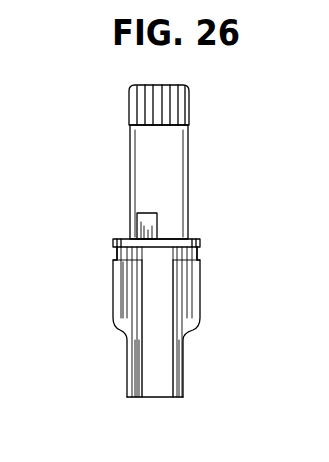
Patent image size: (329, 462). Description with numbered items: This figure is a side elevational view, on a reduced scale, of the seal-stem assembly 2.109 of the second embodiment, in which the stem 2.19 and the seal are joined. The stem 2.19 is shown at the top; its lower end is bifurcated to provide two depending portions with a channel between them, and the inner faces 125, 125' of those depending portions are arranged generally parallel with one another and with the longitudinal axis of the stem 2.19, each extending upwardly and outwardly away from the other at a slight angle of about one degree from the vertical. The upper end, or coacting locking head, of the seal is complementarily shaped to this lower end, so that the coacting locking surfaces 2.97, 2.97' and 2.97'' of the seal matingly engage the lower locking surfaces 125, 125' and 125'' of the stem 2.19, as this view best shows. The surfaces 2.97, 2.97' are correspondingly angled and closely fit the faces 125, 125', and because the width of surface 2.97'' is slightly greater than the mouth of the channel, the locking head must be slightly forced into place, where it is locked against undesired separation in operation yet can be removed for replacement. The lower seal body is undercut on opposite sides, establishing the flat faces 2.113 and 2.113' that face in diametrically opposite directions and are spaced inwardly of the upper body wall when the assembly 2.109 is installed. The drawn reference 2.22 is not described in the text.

The stem 2.19 is at (262, 92).
The seal-stem assembly 2.109 is at (203, 164).
The coacting locking surface 2.97'' is at (102, 219).
The lower locking surface 125'' is at (190, 225).
The coacting locking surface 2.97 is at (73, 320).
The coacting locking surface 2.97' is at (225, 314).
The inner face of depending portion 125 is at (82, 279).
The inner face of depending portion 125' is at (217, 276).
The undercut flat face 2.113 is at (107, 368).
The undercut flat face 2.113' is at (218, 381).
The connector assembly 2.22 is at (201, 352).